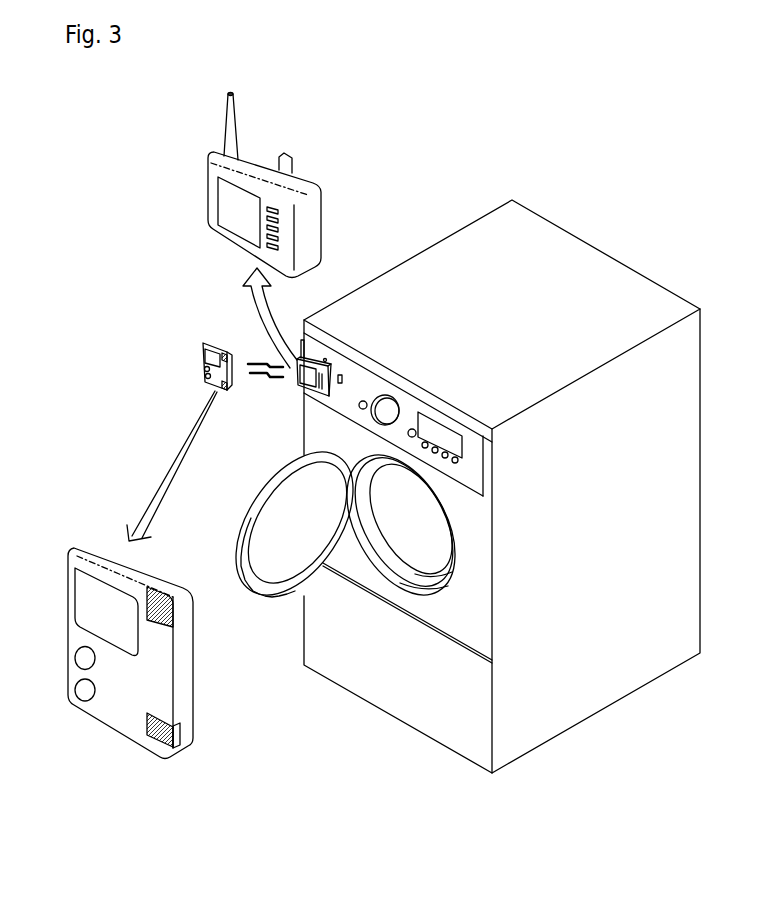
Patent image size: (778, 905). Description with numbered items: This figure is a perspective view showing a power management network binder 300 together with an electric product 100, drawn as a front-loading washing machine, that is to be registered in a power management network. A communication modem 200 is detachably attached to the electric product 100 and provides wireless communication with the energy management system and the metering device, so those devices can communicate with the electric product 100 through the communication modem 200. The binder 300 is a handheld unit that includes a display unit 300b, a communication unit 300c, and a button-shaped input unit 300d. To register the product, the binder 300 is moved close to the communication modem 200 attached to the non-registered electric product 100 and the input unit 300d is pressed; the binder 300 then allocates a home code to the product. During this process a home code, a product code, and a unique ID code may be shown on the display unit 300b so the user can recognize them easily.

The electric product 100 is at (589, 229).
The communication modem 200 is at (286, 122).
The power management network binder 300 is at (170, 629).
The display unit 300b is at (97, 598).
The communication unit 300c is at (157, 597).
The input unit 300d is at (85, 694).